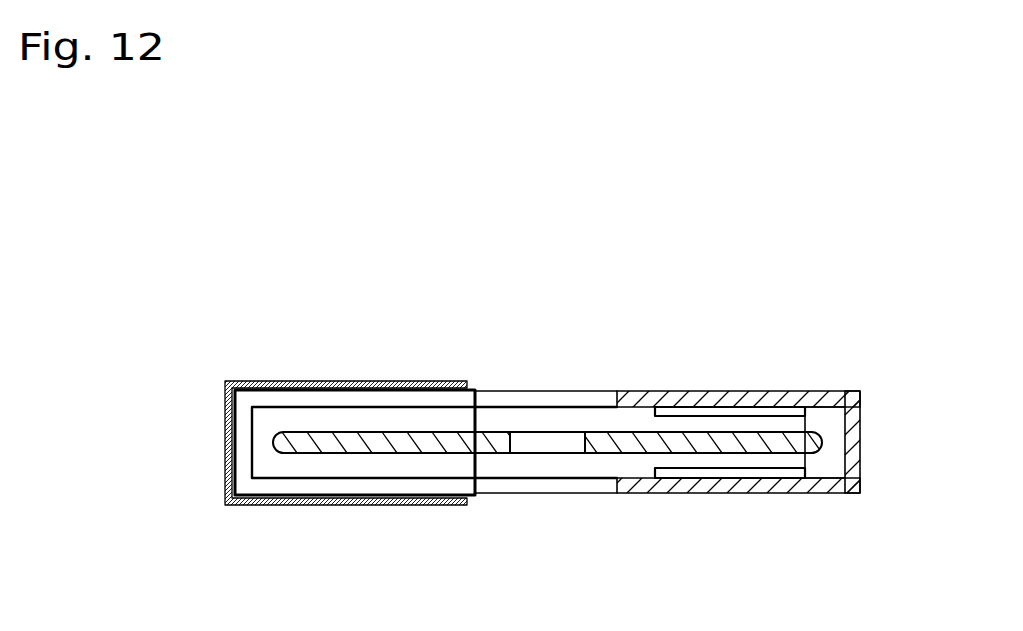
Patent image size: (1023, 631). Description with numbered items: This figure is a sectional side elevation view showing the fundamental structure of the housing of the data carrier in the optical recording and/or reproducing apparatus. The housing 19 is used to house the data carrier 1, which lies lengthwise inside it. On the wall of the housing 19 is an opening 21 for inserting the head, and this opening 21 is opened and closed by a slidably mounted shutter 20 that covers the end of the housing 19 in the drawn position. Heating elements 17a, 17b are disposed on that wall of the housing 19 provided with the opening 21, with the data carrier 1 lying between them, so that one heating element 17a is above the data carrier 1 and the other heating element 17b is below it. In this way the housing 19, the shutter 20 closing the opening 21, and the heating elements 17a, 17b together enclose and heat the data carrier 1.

The data carrier 1 is at (601, 444).
The heating element 17a is at (805, 409).
The heating element 17b is at (829, 493).
The housing 19 is at (863, 424).
The shutter 20 is at (223, 496).
The opening 21 is at (475, 518).